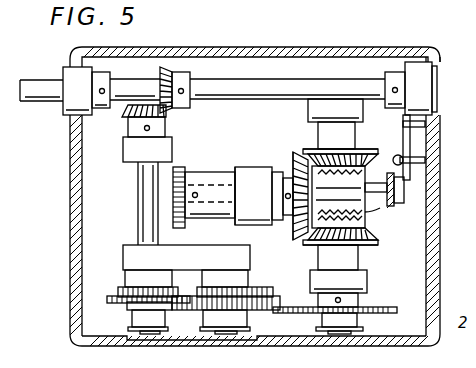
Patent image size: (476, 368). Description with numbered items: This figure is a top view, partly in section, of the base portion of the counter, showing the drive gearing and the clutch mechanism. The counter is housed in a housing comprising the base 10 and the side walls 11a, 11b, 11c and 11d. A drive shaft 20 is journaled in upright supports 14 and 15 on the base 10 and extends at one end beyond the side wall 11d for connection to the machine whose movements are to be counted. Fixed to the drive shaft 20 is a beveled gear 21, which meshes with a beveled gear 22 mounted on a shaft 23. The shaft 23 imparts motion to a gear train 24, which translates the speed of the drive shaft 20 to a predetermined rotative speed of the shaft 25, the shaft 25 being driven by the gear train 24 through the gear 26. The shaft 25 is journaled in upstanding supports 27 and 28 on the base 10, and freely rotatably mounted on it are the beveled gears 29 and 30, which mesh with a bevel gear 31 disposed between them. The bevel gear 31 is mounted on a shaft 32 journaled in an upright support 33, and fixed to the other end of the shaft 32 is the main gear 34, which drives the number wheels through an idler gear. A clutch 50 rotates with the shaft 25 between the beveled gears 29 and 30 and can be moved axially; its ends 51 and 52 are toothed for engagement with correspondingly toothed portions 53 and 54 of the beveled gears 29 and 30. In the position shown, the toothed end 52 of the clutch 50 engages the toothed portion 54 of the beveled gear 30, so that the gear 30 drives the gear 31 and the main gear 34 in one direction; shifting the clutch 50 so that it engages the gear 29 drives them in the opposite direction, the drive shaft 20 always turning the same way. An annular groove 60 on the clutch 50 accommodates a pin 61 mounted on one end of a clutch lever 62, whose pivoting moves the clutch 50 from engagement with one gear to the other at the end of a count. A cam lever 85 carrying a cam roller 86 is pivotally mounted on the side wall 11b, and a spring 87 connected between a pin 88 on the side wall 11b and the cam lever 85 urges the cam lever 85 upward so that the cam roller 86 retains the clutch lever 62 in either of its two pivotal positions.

The base 10 is at (426, 258).
The side wall 11a is at (236, 41).
The side wall 11b is at (432, 62).
The side wall 11c is at (97, 337).
The side wall 11d is at (72, 156).
The upright support 14 is at (72, 112).
The upright support 15 is at (424, 96).
The drive shaft 20 is at (33, 80).
The beveled gear 21 is at (165, 67).
The beveled gear 22 is at (128, 122).
The shaft 23 is at (140, 178).
The gear train 24 is at (110, 300).
The shaft 25 is at (365, 217).
The gear 26 is at (385, 307).
The upstanding support 27 is at (358, 282).
The upstanding support 28 is at (337, 108).
The beveled gear 29 is at (378, 243).
The beveled gear 30 is at (365, 153).
The bevel gear 31 is at (283, 170).
The shaft 32 is at (208, 176).
The upright support 33 is at (235, 168).
The main gear 34 is at (179, 167).
The clutch 50 is at (365, 212).
The end of clutch 51 is at (295, 230).
The end of clutch 52 is at (300, 156).
The toothed portion 53 is at (300, 244).
The toothed portion 54 is at (328, 157).
The annular groove 60 is at (336, 170).
The pin 61 is at (375, 186).
The clutch lever 62 is at (395, 184).
The cam lever 85 is at (418, 123).
The cam roller 86 is at (404, 194).
The spring 87 is at (404, 158).
The pin 88 is at (412, 162).